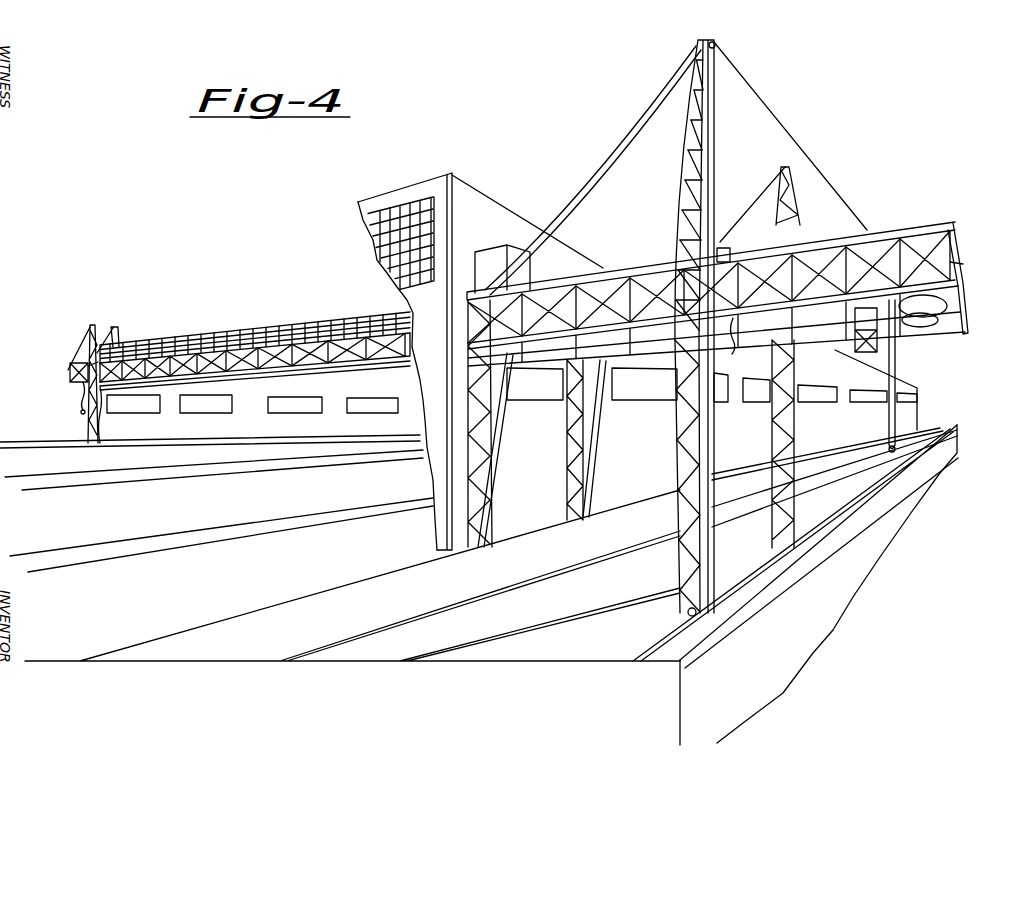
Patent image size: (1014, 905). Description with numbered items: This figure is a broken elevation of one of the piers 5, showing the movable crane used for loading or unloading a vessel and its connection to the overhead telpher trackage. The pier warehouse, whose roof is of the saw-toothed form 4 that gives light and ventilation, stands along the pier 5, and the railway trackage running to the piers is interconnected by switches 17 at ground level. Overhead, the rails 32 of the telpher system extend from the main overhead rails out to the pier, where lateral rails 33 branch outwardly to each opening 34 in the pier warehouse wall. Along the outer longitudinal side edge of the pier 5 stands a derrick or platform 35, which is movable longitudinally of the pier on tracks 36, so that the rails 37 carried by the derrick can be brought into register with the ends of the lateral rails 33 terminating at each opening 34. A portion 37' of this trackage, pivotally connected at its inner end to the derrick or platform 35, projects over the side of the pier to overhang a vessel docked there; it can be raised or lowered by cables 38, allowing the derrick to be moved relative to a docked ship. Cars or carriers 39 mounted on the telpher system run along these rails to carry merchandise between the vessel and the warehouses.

The saw-toothed roof 4 is at (455, 179).
The pier 5 is at (221, 531).
The switch 17 is at (152, 477).
The overhead rail 32 is at (226, 378).
The lateral rail 33 is at (382, 368).
The opening 34 is at (545, 388).
The derrick or platform 35 is at (622, 298).
The track 36 is at (440, 553).
The rail 37 is at (742, 345).
The projecting portion 37' is at (518, 313).
The cable 38 is at (805, 175).
The car or carrier 39 is at (862, 352).